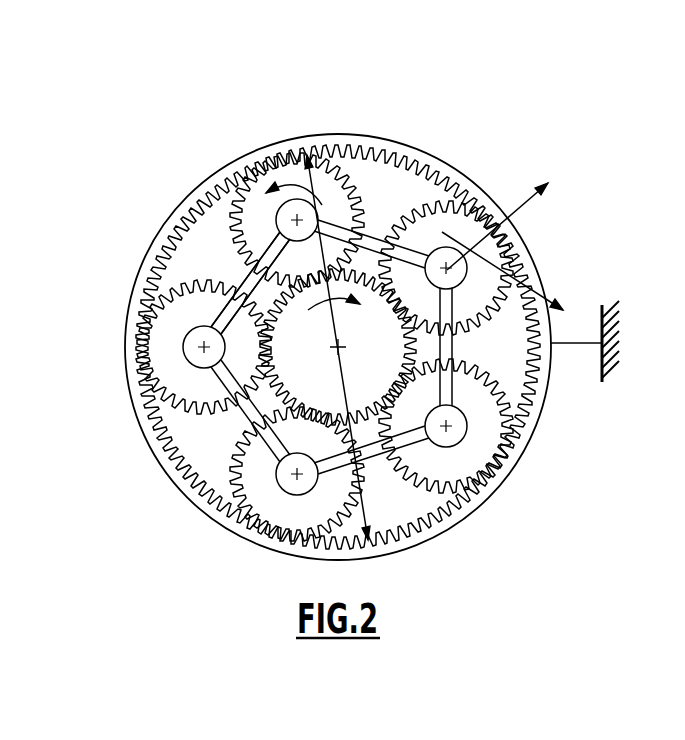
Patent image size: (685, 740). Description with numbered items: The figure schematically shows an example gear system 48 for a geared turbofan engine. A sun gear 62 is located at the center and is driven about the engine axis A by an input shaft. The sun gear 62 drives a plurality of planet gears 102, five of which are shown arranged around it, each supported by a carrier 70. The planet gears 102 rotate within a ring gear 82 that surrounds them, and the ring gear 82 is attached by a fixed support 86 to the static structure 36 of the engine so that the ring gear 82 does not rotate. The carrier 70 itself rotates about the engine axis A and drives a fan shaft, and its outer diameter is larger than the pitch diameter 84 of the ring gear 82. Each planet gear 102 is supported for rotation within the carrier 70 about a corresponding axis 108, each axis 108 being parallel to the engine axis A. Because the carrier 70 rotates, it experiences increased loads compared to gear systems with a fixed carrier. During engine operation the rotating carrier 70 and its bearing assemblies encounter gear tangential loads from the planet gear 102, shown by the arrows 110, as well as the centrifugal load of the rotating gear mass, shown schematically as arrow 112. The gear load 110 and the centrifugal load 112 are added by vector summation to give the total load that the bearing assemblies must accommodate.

The gear system 48 is at (452, 120).
The planet gears 102 is at (256, 204).
The axis 108 is at (446, 268).
The carrier 70 is at (283, 232).
The pitch diameter 84 is at (287, 244).
The centrifugal load 112 is at (530, 202).
The gear load 110 is at (542, 272).
The static structure 36 is at (606, 337).
The fixed support 86 is at (562, 345).
The ring gear 82 is at (533, 437).
The sun gear 62 is at (360, 387).
The engine axis A is at (342, 347).